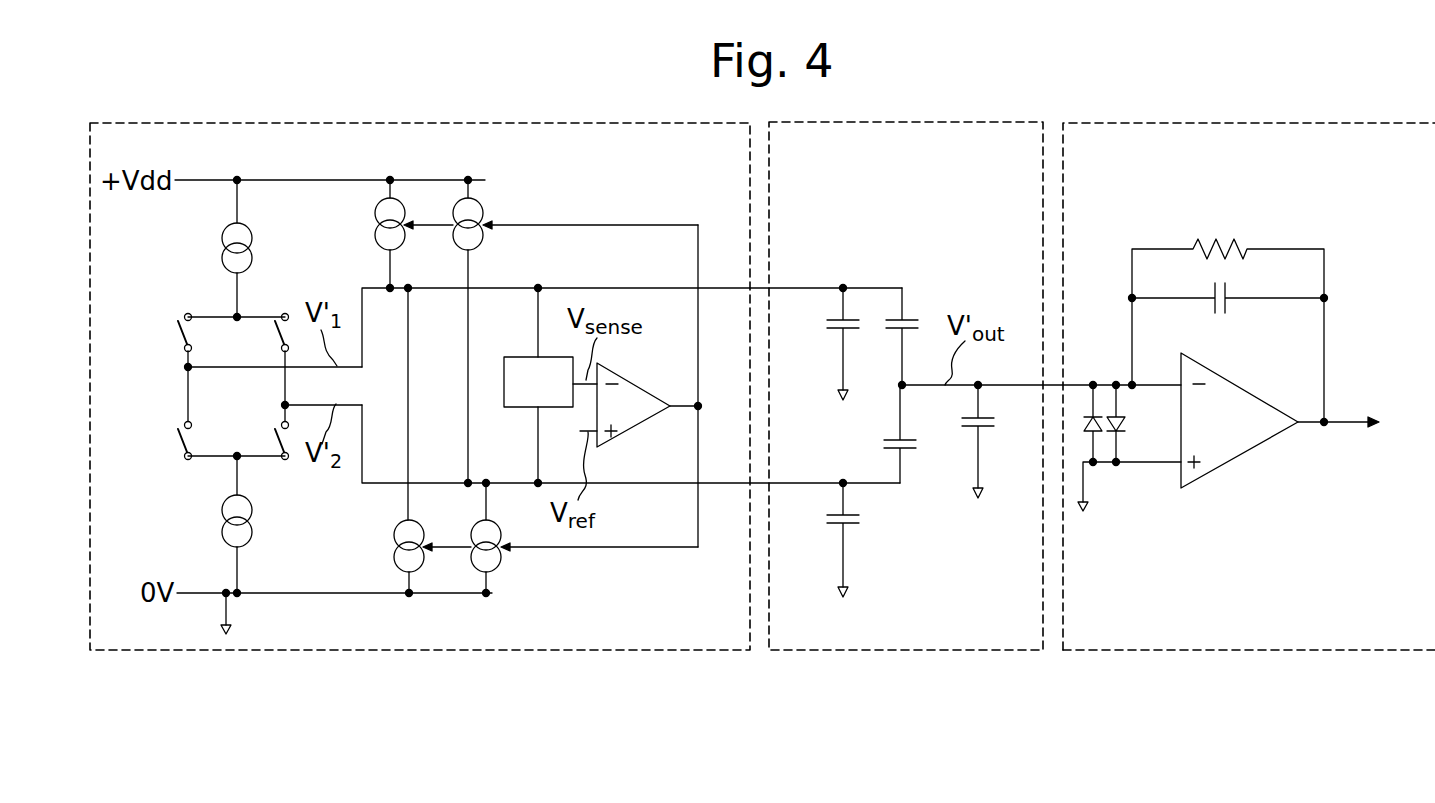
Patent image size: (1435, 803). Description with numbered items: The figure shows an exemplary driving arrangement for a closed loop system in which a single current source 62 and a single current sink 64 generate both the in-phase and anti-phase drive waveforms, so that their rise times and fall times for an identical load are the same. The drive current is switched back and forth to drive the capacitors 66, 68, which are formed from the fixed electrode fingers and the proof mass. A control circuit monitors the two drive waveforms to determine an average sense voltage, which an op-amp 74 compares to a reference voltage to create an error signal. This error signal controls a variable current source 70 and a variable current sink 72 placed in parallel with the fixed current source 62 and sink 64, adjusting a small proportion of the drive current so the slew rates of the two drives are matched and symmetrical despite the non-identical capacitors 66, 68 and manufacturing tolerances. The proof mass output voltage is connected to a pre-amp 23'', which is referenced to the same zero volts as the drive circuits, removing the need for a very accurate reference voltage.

The current source 62 is at (252, 236).
The current sink 64 is at (292, 517).
The capacitor 66 is at (912, 320).
The capacitor 68 is at (912, 452).
The variable current source 70 is at (404, 200).
The variable current sink 72 is at (418, 563).
The op-amp 74 is at (632, 428).
The pre-amp 23'' is at (1249, 428).